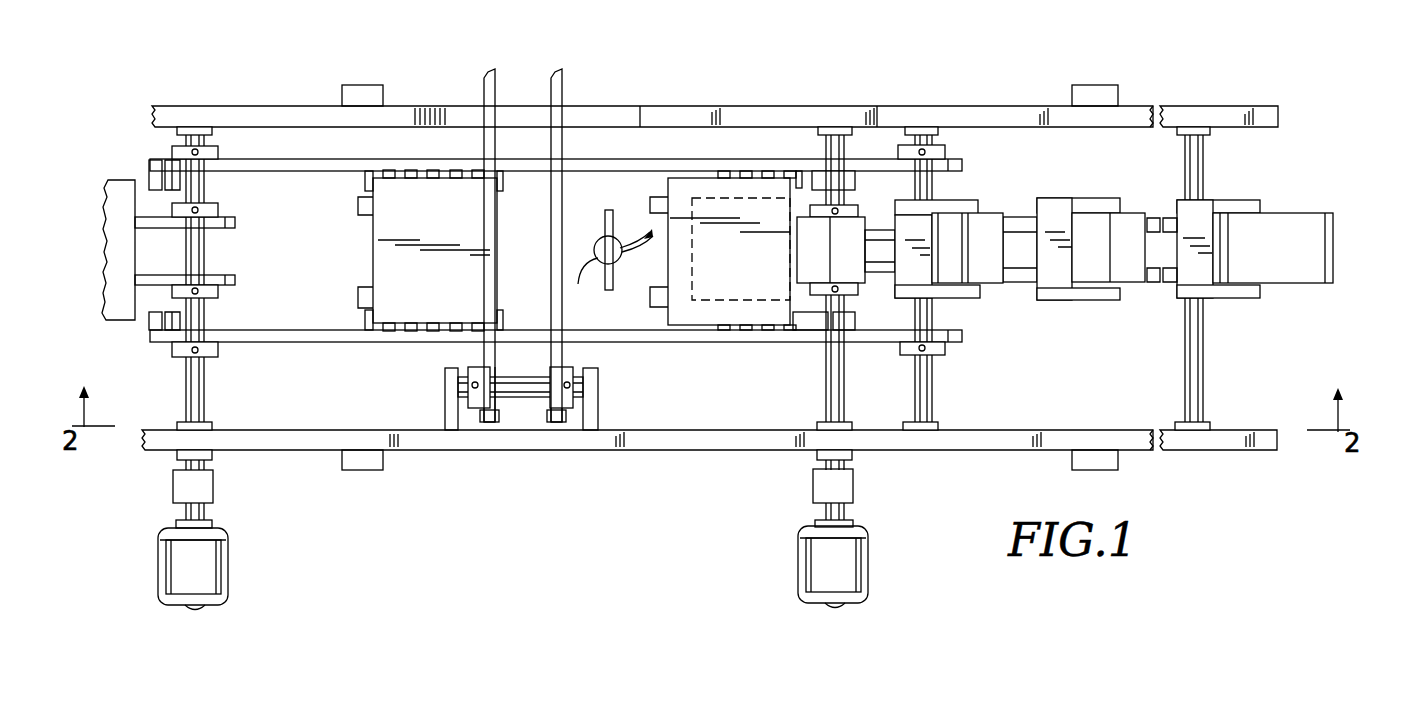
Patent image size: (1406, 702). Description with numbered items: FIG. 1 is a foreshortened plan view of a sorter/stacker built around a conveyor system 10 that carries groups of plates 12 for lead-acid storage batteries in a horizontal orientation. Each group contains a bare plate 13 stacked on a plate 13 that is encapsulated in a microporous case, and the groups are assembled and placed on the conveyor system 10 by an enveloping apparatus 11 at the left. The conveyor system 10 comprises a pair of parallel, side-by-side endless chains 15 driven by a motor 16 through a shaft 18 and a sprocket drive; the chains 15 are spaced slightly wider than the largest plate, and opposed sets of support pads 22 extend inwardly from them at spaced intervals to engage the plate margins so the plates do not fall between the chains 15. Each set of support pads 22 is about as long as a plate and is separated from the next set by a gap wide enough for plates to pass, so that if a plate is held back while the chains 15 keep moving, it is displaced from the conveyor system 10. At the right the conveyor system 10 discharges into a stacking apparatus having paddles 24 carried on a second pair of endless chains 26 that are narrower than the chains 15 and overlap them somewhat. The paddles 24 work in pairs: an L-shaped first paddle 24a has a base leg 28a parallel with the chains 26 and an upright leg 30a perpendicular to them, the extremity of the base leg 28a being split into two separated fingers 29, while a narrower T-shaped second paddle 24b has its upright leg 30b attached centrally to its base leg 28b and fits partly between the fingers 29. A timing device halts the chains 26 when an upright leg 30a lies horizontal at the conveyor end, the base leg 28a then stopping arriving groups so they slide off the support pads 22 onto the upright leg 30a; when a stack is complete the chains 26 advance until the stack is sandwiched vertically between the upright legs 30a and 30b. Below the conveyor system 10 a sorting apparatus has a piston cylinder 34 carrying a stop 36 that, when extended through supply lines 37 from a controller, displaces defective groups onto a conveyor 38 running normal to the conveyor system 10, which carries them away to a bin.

The conveyor system 10 is at (272, 150).
The enveloping apparatus 11 is at (90, 246).
The groups of plates 12 is at (355, 203).
The plate 13 is at (373, 242).
The endless chains 15 is at (645, 160).
The motor 16 is at (230, 584).
The shaft 18 is at (205, 396).
The support pads 22 is at (150, 178).
The paddles 24 is at (1059, 198).
The first paddle 24a is at (943, 198).
The second paddle 24b is at (987, 288).
The endless chains 26 is at (1018, 270).
The base leg 28a is at (970, 302).
The base leg 28b is at (998, 288).
The fingers 29 is at (965, 205).
The upright leg 30a is at (897, 220).
The upright leg 30b is at (955, 262).
The piston cylinder 34 is at (582, 286).
The stop 36 is at (604, 222).
The supply lines 37 is at (624, 256).
The conveyor 38 is at (521, 82).